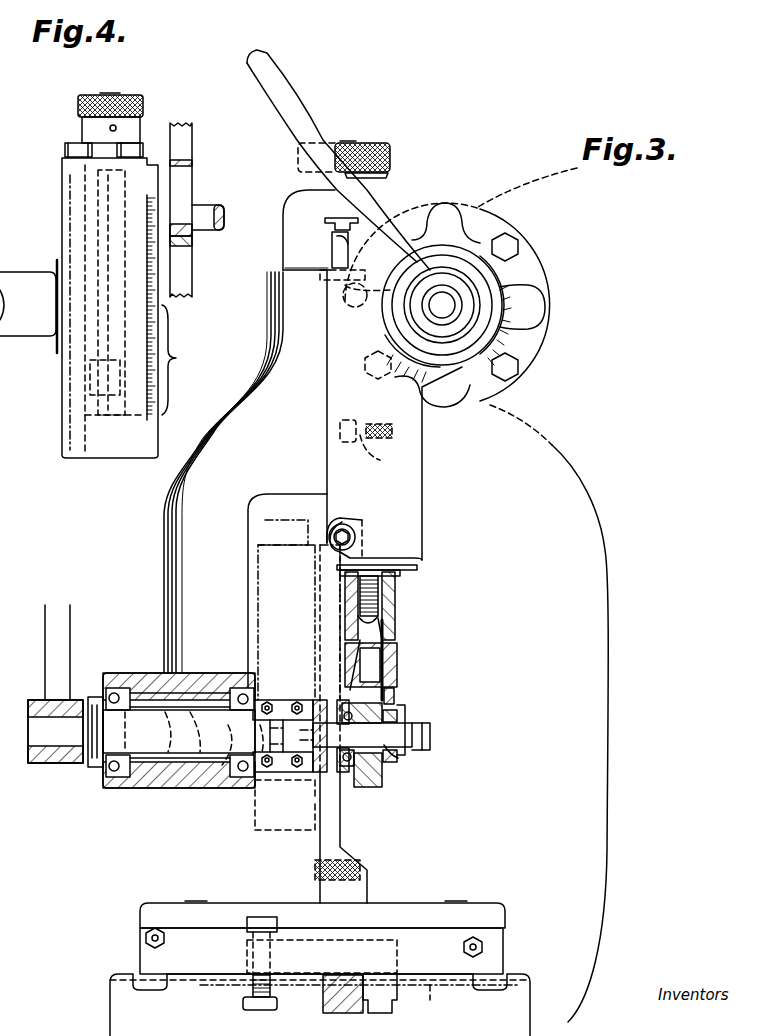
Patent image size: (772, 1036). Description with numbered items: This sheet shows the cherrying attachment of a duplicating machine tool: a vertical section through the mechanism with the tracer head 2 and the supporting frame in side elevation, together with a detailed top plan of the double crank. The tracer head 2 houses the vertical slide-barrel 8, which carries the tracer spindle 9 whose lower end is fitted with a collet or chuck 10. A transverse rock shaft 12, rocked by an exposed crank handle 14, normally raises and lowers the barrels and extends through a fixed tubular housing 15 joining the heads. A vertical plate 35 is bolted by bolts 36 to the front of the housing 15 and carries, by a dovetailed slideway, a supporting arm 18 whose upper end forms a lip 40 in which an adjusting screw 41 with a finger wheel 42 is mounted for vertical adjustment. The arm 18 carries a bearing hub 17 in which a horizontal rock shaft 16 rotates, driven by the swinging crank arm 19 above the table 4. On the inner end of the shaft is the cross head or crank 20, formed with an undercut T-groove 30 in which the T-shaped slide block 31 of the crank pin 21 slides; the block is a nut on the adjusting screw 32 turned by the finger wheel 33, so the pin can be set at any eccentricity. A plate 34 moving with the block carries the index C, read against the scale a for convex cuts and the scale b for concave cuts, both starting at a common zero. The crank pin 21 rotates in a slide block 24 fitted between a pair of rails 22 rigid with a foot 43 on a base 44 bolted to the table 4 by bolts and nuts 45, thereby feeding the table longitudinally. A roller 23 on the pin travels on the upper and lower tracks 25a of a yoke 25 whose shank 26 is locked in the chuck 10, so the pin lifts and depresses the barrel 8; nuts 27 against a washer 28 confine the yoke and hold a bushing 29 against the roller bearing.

In FIG. 3, the tracer head 2 is at (415, 526).
In FIG. 3, the table 4 is at (198, 999).
In FIG. 3, the slide-barrel 8 is at (396, 578).
In FIG. 3, the tracer spindle 9 is at (380, 633).
In FIG. 3, the collet or chuck 10 is at (398, 666).
In FIG. 3, the rock shaft 12 is at (446, 313).
In FIG. 3, the crank handle 14 is at (300, 116).
In FIG. 3, the tubular housing 15 is at (500, 280).
In FIG. 4, the rock shaft 16 is at (15, 280).
In FIG. 3, the rock shaft 16 is at (141, 732).
In FIG. 3, the bearing hub 17 is at (158, 790).
In FIG. 3, the supporting arm 18 is at (275, 344).
In FIG. 3, the crank arm 19 is at (50, 620).
In FIG. 4, the crank 20 is at (66, 430).
In FIG. 3, the crank 20 is at (272, 700).
In FIG. 4, the crank pin 21 is at (212, 222).
In FIG. 3, the crank pin 21 is at (370, 735).
In FIG. 4, the rails 22 is at (185, 162).
In FIG. 3, the rails 22 is at (342, 841).
In FIG. 3, the roller 23 is at (384, 708).
In FIG. 4, the slide block 24 is at (192, 245).
In FIG. 3, the slide block 24 is at (312, 700).
In FIG. 3, the yoke 25 is at (397, 696).
In FIG. 3, the tracks 25a is at (320, 802).
In FIG. 3, the shank 26 is at (384, 638).
In FIG. 3, the nuts 27 is at (428, 725).
In FIG. 3, the washer 28 is at (384, 768).
In FIG. 3, the bushing 29 is at (400, 756).
In FIG. 4, the T-groove 30 is at (90, 377).
In FIG. 3, the T-groove 30 is at (258, 737).
In FIG. 4, the slide block 31 is at (95, 216).
In FIG. 3, the slide block 31 is at (258, 718).
In FIG. 4, the adjusting screw 32 is at (105, 150).
In FIG. 3, the adjusting screw 32 is at (285, 805).
In FIG. 4, the finger wheel 33 is at (143, 103).
In FIG. 4, the plate 34 is at (163, 198).
In FIG. 3, the plate 34 is at (318, 708).
In FIG. 3, the vertical plate 35 is at (360, 236).
In FIG. 3, the bolts 36 is at (350, 282).
In FIG. 3, the lip 40 is at (308, 198).
In FIG. 3, the adjusting screw 41 is at (375, 175).
In FIG. 3, the finger wheel 42 is at (391, 156).
In FIG. 3, the supporting foot 43 is at (172, 910).
In FIG. 3, the base 44 is at (352, 965).
In FIG. 3, the bolts and nuts 45 is at (255, 917).
In FIG. 4, the index C is at (162, 214).
In FIG. 4, the scale a is at (130, 270).
In FIG. 4, the scale b is at (200, 365).